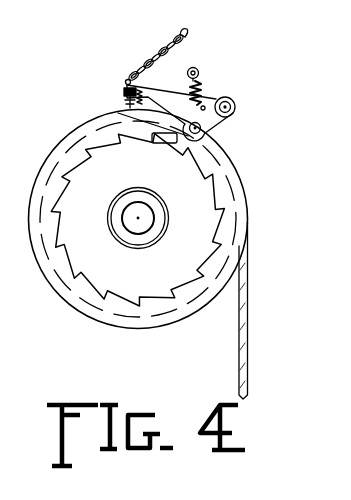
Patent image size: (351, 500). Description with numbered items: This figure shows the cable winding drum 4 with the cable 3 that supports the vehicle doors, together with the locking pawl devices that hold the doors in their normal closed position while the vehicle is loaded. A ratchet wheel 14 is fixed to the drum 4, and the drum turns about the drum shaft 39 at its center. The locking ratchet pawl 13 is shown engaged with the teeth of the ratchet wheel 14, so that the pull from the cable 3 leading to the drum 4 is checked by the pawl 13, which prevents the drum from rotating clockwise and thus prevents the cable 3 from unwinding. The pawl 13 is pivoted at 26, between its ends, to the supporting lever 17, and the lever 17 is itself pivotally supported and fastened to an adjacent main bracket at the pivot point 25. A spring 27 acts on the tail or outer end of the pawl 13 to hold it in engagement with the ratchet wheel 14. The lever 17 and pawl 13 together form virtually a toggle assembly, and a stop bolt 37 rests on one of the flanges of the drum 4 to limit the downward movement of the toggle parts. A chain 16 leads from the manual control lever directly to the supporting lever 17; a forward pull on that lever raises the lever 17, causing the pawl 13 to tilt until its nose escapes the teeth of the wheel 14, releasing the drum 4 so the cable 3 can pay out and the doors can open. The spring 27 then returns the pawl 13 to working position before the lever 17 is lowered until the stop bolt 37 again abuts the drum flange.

The cable 3 is at (247, 354).
The drum 4 is at (228, 253).
The locking ratchet pawl 13 is at (118, 113).
The ratchet wheel 14 is at (194, 173).
The chain 16 is at (182, 34).
The supporting lever 17 is at (165, 98).
The pivot point 25 is at (235, 105).
The pivot 26 is at (200, 128).
The spring 27 is at (202, 91).
The stop bolt 37 is at (124, 97).
The drum shaft 39 is at (149, 218).